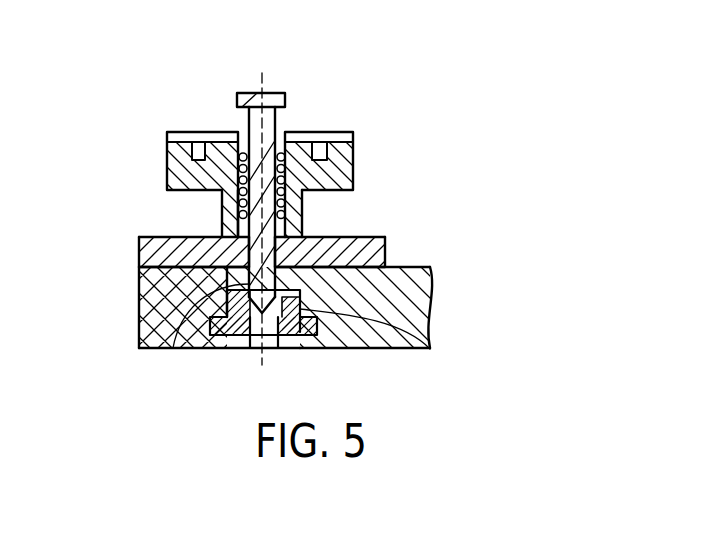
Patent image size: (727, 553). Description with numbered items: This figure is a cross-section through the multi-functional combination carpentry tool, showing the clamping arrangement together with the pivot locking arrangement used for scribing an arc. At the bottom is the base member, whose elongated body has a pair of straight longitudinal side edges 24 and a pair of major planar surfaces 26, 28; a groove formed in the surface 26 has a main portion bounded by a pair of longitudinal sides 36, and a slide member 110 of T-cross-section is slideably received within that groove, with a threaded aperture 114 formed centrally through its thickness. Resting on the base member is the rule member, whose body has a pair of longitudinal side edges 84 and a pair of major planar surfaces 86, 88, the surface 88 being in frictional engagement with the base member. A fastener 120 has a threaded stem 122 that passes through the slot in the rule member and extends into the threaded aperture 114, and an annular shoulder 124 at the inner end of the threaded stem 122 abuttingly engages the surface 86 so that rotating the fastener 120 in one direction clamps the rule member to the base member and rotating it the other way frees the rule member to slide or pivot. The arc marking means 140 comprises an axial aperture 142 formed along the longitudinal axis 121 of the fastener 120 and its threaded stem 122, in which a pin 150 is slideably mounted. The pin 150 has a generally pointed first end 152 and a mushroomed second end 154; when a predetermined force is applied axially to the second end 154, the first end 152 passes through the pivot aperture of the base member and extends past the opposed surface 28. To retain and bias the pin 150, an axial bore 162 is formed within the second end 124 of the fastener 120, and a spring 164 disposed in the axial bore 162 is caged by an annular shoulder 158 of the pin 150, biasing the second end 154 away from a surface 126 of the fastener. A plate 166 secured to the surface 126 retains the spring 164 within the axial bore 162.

The longitudinal side edges 24 is at (140, 327).
The major planar surface 26 is at (420, 266).
The major planar surface 28 is at (153, 349).
The longitudinal sides 36 is at (276, 291).
The longitudinal side edges 84 is at (140, 250).
The major planar surface 86 is at (150, 237).
The major planar surface 88 is at (140, 287).
The slide member 110 is at (173, 349).
The threaded aperture 114 is at (253, 349).
The fastener 120 is at (355, 150).
The longitudinal axis 121 is at (255, 82).
The threaded stem 122 is at (428, 349).
The annular shoulder 124 is at (303, 207).
The surface 126 is at (185, 131).
The arc marking means 140 is at (333, 73).
The axial aperture 142 is at (273, 349).
The pin 150 is at (238, 118).
The pointed first end 152 is at (140, 344).
The mushroomed second end 154 is at (270, 102).
The annular shoulder 158 is at (234, 130).
The axial bore 162 is at (278, 126).
The spring 164 is at (222, 207).
The plate 166 is at (351, 131).